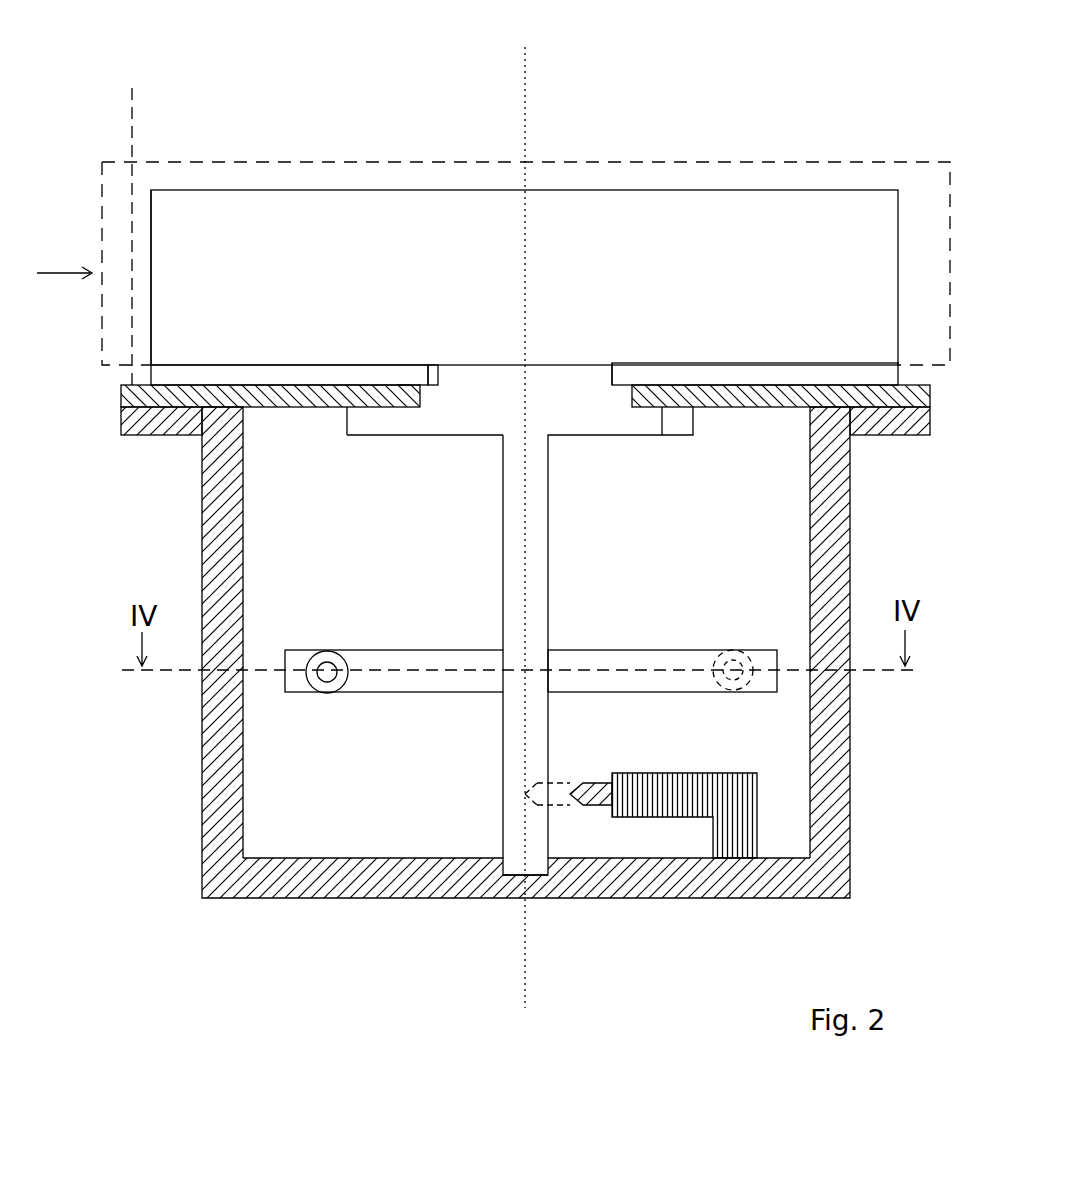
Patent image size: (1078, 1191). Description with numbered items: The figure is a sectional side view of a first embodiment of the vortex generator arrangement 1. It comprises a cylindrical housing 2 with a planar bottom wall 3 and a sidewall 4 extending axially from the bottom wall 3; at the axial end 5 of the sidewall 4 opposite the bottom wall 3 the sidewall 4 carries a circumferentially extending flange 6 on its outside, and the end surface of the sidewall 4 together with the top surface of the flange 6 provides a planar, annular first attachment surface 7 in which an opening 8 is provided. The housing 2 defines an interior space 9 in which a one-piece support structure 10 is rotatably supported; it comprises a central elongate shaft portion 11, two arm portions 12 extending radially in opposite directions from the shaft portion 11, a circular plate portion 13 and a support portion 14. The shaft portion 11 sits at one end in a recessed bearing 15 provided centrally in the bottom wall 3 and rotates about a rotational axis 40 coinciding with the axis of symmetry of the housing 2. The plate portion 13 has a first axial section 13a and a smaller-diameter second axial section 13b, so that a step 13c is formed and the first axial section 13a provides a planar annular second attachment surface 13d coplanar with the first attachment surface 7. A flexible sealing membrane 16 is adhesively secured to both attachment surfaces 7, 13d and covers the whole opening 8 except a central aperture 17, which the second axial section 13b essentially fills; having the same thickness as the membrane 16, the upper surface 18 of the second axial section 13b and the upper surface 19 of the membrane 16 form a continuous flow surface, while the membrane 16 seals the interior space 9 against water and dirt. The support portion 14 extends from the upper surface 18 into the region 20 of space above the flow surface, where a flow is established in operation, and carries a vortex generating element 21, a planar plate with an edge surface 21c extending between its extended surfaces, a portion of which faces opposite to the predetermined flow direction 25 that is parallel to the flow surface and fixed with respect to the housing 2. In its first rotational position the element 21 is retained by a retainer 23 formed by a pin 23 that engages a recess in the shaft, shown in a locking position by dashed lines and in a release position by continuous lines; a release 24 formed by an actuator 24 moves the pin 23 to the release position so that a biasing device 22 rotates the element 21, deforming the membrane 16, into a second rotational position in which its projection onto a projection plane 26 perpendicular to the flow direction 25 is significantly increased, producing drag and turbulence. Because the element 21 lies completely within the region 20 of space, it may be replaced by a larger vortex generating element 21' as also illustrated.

The vortex generator arrangement 1 is at (311, 74).
The cylindrical housing 2 is at (887, 800).
The bottom wall 3 is at (358, 888).
The sidewall 4 is at (225, 590).
The axial end 5 is at (871, 450).
The flange 6 is at (178, 428).
The first attachment surface 7 is at (890, 395).
The opening 8 is at (247, 410).
The interior space 9 is at (763, 548).
The support structure 10 is at (597, 583).
The shaft portion 11 is at (503, 537).
The arm portions 12 is at (432, 660).
The plate portion 13 is at (714, 438).
The first axial section 13a is at (355, 430).
The second axial section 13b is at (392, 434).
The step 13c is at (398, 385).
The second attachment surface 13d is at (662, 412).
The support portion 14 is at (612, 375).
The recessed bearing 15 is at (540, 876).
The sealing membrane 16 is at (715, 393).
The central aperture 17 is at (630, 390).
The upper surface of the second axial section 18 is at (433, 360).
The upper surface of the membrane 19 is at (215, 385).
The region of space 20 is at (680, 102).
The vortex generating element 21 is at (524, 223).
The edge surface 21c is at (155, 235).
The vortex generating element 21' is at (896, 118).
The biasing device 22 is at (323, 665).
The retainer 23 is at (598, 783).
The release 24 is at (660, 775).
The predetermined direction 25 is at (60, 273).
The projection plane 26 is at (136, 110).
The rotational axis 40 is at (525, 68).